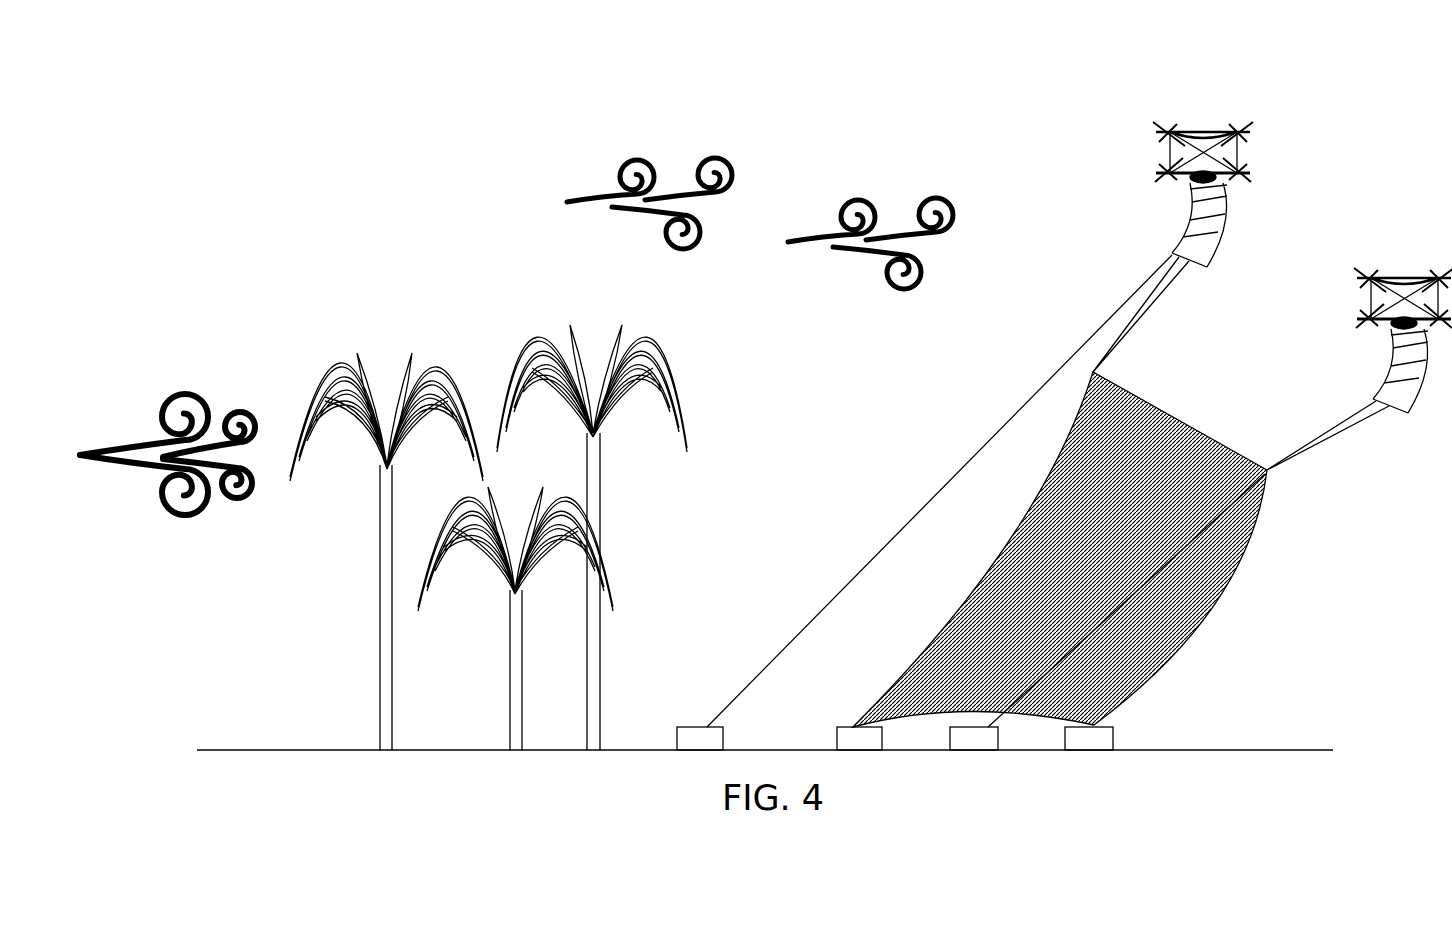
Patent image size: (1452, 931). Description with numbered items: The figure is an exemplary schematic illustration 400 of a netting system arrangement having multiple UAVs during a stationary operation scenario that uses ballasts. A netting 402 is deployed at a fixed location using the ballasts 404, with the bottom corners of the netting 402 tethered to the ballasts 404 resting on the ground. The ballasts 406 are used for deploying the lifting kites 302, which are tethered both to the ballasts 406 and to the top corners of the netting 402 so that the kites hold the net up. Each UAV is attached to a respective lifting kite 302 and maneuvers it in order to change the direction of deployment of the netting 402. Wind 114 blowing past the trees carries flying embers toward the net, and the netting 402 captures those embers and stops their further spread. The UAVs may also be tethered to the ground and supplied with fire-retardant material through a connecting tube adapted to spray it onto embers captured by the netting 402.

The wind 114 is at (170, 376).
The lifting kite 302 is at (1226, 213).
The netting system arrangement 400 is at (898, 108).
The netting 402 is at (1190, 426).
The ballasts 404 is at (840, 727).
The ballasts 406 is at (678, 727).